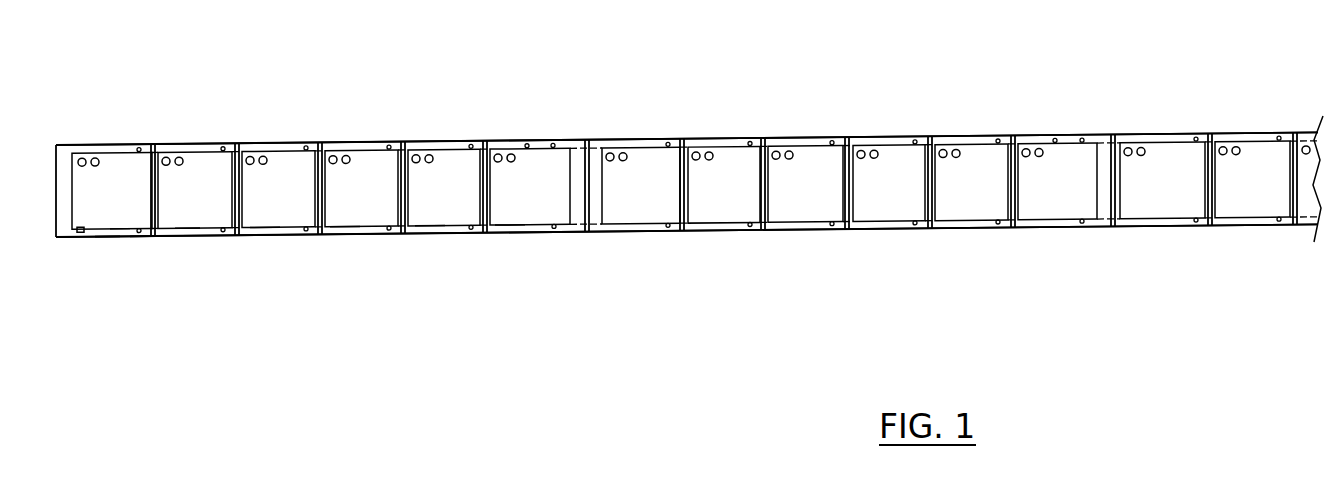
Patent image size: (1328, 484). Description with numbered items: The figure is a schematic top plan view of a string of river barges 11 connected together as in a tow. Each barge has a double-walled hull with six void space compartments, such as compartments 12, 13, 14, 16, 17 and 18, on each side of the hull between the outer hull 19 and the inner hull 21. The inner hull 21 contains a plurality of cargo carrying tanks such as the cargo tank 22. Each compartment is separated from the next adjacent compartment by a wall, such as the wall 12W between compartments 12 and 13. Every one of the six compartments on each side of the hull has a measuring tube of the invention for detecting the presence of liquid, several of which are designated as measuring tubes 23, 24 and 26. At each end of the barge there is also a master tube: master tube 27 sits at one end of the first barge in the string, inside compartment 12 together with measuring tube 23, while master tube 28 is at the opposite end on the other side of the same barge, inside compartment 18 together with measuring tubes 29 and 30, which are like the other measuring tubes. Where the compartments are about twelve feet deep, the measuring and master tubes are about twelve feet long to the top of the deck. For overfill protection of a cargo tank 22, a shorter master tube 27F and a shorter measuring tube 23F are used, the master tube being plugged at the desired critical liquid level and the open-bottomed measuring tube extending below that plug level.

The river barges 11 is at (297, 112).
The void space compartment 12 is at (110, 238).
The wall 12W is at (140, 237).
The void space compartment 13 is at (154, 233).
The void space compartment 14 is at (263, 233).
The void space compartment 16 is at (342, 235).
The void space compartment 17 is at (428, 232).
The void space compartment 18 is at (508, 233).
The outer hull 19 is at (64, 232).
The inner hull 21 is at (106, 238).
The cargo carrying tank 22 is at (321, 188).
The measuring tube 23 is at (120, 235).
The measuring tube 23F is at (96, 158).
The measuring tube 24 is at (187, 233).
The measuring tube 26 is at (307, 235).
The master tube 27 is at (81, 238).
The master tube 27F is at (83, 158).
The master tube 28 is at (554, 142).
The measuring tube 29 is at (526, 142).
The measuring tube 30 is at (554, 234).